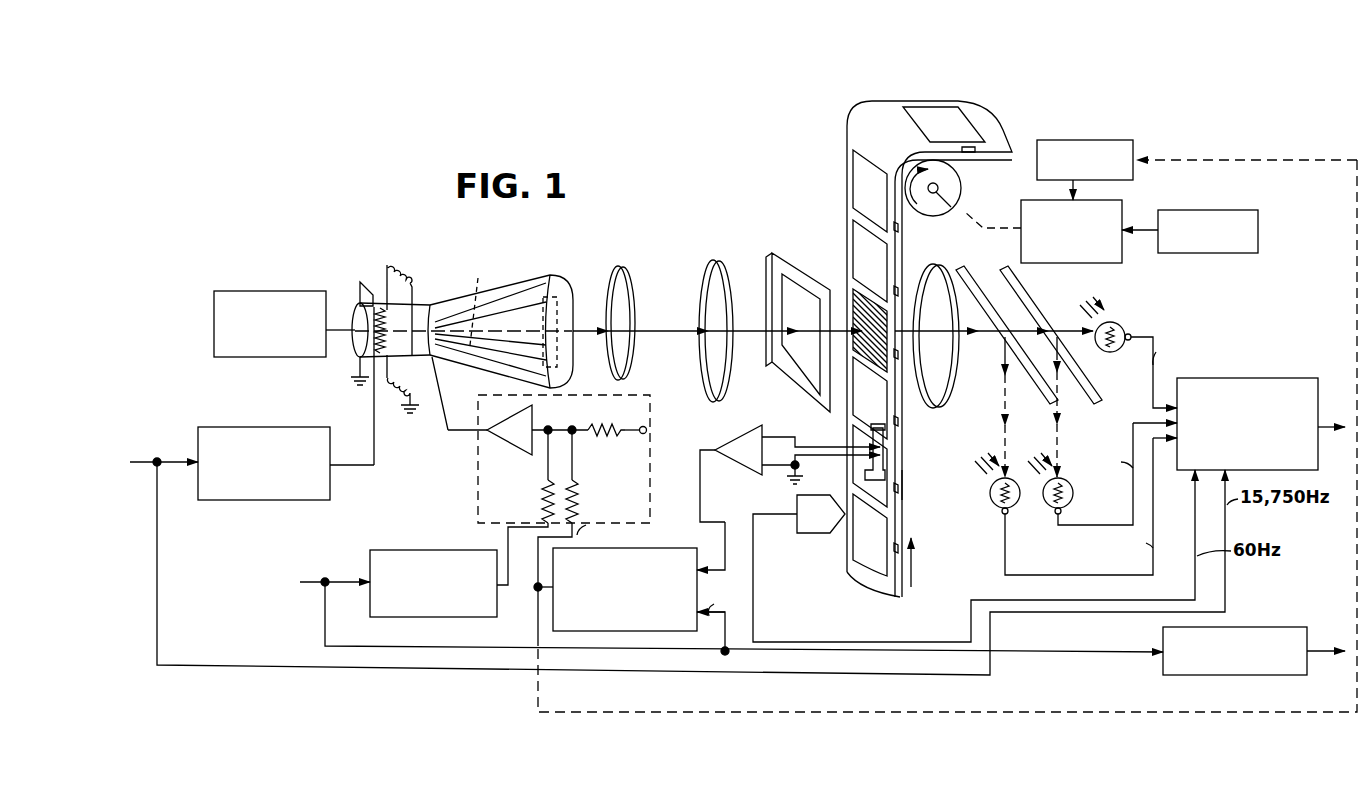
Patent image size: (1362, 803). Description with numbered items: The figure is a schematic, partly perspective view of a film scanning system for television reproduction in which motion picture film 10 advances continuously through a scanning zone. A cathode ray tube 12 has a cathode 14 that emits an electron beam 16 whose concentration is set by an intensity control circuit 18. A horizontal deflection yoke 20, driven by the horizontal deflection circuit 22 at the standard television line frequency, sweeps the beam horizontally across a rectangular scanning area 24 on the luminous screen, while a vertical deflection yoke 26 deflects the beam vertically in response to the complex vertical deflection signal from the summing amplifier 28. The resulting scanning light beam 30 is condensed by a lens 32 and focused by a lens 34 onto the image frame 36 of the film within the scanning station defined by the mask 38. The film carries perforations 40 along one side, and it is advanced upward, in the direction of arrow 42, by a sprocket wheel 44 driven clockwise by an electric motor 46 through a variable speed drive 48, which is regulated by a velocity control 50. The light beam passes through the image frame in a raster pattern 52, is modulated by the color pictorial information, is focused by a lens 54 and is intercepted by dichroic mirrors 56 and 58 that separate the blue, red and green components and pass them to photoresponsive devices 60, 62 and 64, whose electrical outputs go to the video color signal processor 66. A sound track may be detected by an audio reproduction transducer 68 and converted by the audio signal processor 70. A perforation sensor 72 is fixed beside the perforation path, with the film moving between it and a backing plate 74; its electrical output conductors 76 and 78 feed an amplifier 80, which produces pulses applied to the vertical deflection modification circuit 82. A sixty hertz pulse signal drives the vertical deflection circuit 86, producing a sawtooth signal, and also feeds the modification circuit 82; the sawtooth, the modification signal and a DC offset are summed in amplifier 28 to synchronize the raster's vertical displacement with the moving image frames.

The motion picture film 10 is at (845, 180).
The cathode ray tube 12 is at (549, 273).
The cathode 14 is at (355, 316).
The electron beam 16 is at (492, 287).
The intensity control circuit 18 is at (257, 293).
The horizontal deflection yoke 20 is at (381, 270).
The horizontal deflection circuit 22 is at (313, 428).
The scanning area 24 is at (560, 298).
The vertical deflection yoke 26 is at (390, 270).
The summing amplifier 28 is at (478, 482).
The scanning light beam 30 is at (688, 332).
The lens 32 is at (640, 268).
The lens 34 is at (705, 268).
The image frame 36 is at (853, 241).
The mask 38 is at (776, 262).
The perforation 40 is at (902, 246).
The arrow 42 is at (916, 580).
The sprocket wheel 44 is at (962, 192).
The electric motor 46 is at (1250, 213).
The variable speed drive 48 is at (1122, 216).
The velocity control 50 is at (1128, 141).
The raster pattern 52 is at (853, 297).
The lens 54 is at (945, 400).
The dichroic mirror 56 is at (972, 293).
The dichroic mirror 58 is at (1031, 306).
The photoresponsive device 60 is at (993, 504).
The photoresponsive device 62 is at (1070, 504).
The photoresponsive device 64 is at (1118, 323).
The video color signal processor 66 is at (1248, 380).
The audio reproduction transducer 68 is at (818, 528).
The audio signal processor 70 is at (1245, 627).
The perforation sensor 72 is at (868, 457).
The backing plate 74 is at (905, 484).
The electrical output conductor 76 is at (793, 432).
The electrical output conductor 78 is at (808, 455).
The amplifier 80 is at (750, 468).
The vertical deflection modification circuit 82 is at (652, 549).
The vertical deflection circuit 86 is at (426, 551).